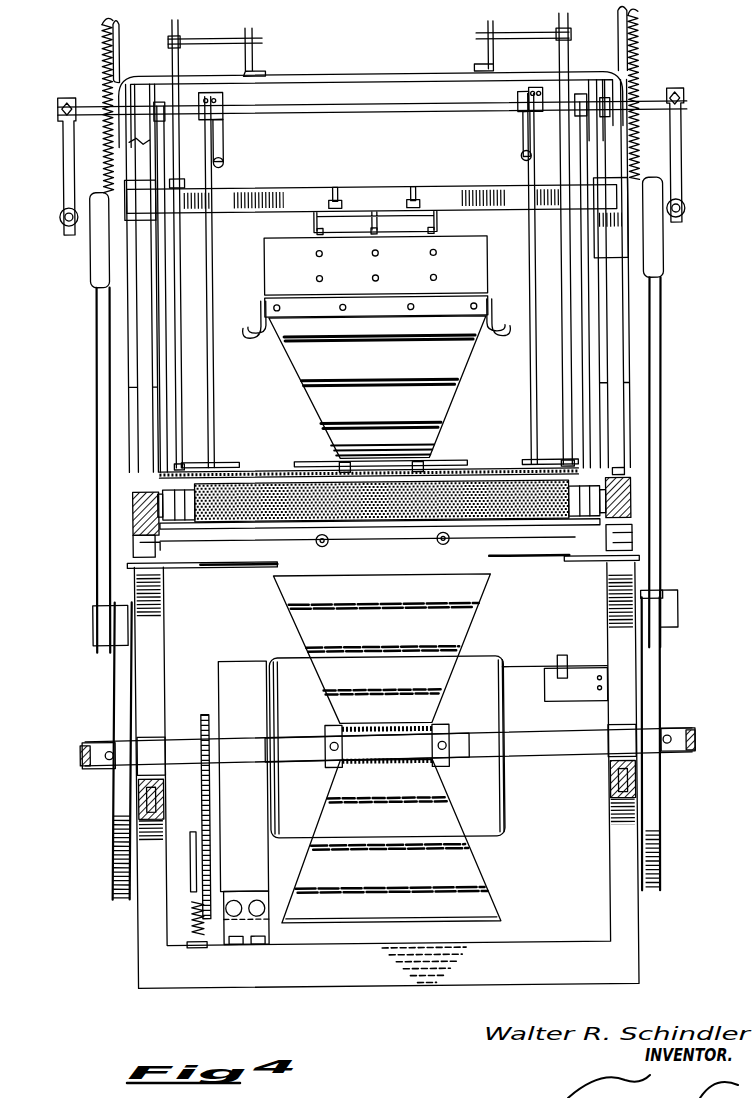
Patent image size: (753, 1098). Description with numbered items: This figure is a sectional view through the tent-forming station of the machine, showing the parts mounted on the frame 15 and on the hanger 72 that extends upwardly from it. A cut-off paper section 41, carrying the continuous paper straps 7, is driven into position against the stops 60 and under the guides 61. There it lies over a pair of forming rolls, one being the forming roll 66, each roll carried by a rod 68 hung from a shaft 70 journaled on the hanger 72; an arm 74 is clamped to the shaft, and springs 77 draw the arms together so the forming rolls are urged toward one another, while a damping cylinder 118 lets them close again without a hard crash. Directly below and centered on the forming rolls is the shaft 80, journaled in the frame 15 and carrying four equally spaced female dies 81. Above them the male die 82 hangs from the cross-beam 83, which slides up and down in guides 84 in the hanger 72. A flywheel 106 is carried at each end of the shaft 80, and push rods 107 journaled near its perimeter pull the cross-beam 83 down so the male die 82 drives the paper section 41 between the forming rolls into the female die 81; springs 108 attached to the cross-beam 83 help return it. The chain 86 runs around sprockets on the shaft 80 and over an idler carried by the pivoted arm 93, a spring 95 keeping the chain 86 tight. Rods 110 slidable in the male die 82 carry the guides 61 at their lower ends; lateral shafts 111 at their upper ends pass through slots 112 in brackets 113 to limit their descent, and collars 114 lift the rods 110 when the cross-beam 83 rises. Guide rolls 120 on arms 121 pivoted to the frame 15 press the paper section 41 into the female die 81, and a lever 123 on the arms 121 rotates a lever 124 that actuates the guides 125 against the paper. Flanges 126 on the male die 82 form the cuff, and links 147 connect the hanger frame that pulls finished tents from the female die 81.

The paper straps 7 is at (428, 465).
The frame 15 is at (155, 662).
The paper section 41 is at (275, 465).
The stops 60 is at (215, 290).
The guides 61 is at (237, 461).
The forming roll 66 is at (405, 528).
The rod 68 is at (178, 382).
The shaft 70 is at (434, 112).
The hanger 72 is at (620, 140).
The arm 74 is at (228, 152).
The springs 77 is at (230, 162).
The shaft 80 is at (574, 752).
The female dies 81 is at (470, 620).
The male die 82 is at (442, 398).
The cross-beam 83 is at (300, 188).
The guides 84 is at (620, 258).
The chain 86 is at (205, 713).
The arm 93 is at (188, 862).
The spring 95 is at (186, 915).
The flywheel 106 is at (111, 704).
The push rods 107 is at (105, 560).
The springs 108 is at (106, 74).
The rods 110 is at (187, 418).
The shafts 111 is at (215, 30).
The slots 112 is at (262, 58).
The brackets 113 is at (496, 58).
The collars 114 is at (190, 180).
The damping cylinder 118 is at (63, 228).
The guide rolls 120 is at (324, 547).
The arms 121 is at (243, 544).
The lever 123 is at (130, 544).
The lever 124 is at (172, 570).
The guides 125 is at (208, 566).
The flanges 126 is at (498, 300).
The links 147 is at (80, 765).